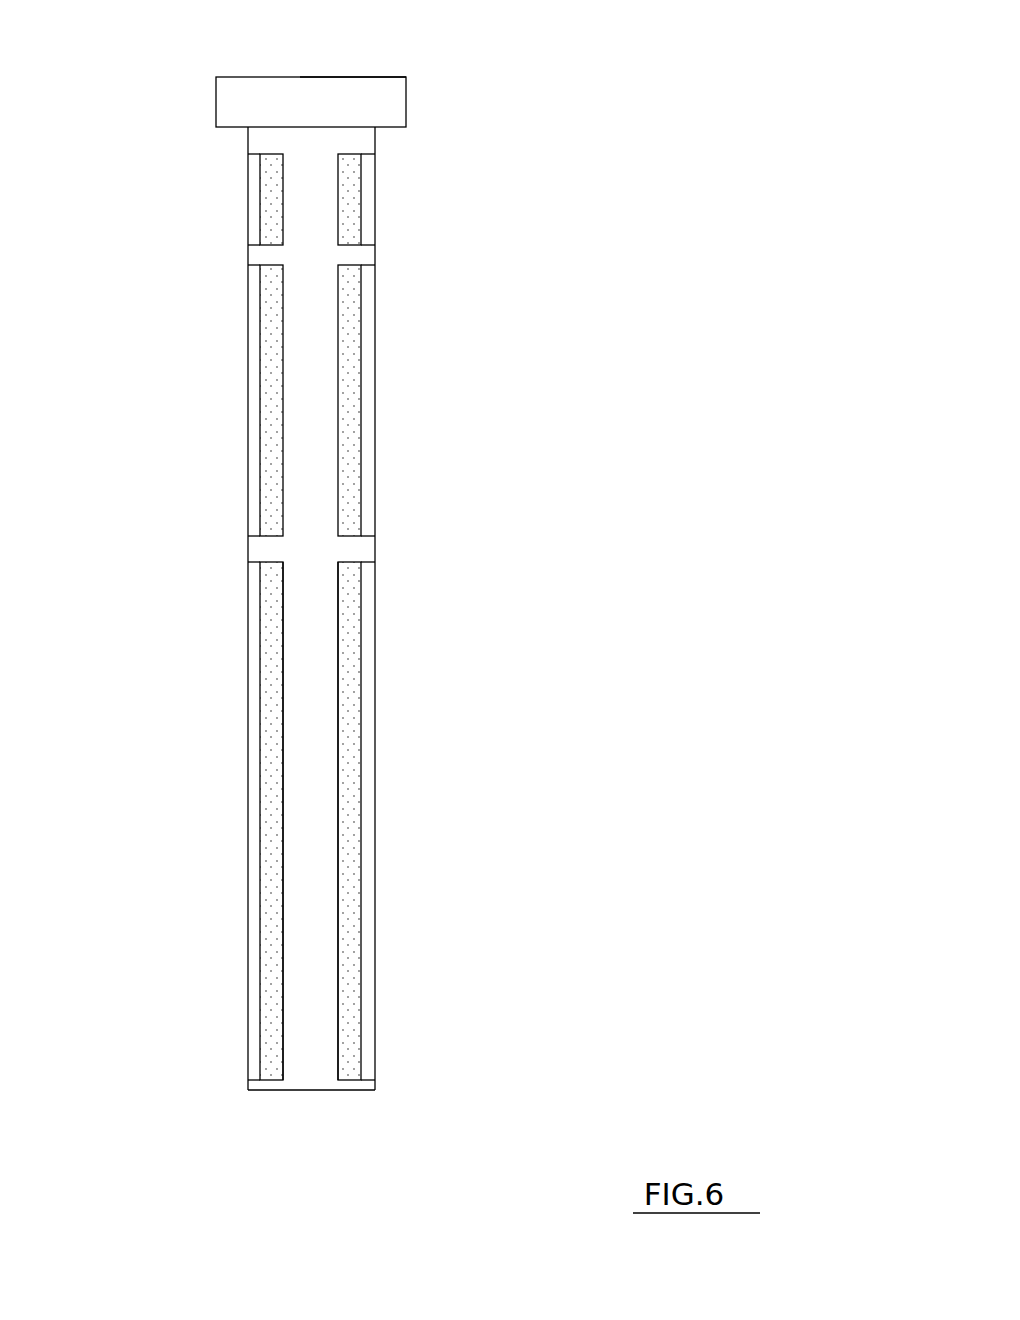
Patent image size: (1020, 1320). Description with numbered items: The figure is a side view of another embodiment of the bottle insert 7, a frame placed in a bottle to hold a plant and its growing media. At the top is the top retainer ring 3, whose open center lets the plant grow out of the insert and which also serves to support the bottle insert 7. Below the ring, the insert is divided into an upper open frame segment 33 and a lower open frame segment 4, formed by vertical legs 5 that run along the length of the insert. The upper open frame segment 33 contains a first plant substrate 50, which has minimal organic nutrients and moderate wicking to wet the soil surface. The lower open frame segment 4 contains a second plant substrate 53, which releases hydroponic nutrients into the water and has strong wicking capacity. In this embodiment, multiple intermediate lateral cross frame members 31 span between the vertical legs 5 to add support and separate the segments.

The top retainer ring 3 is at (406, 103).
The bottle insert 7 is at (384, 79).
The lateral cross frame member 31 is at (360, 256).
The upper open frame segment 33 is at (305, 401).
The first plant substrate 50 is at (349, 382).
The lower open frame segment 4 is at (296, 821).
The second plant substrate 53 is at (350, 903).
The vertical legs 5 is at (312, 797).